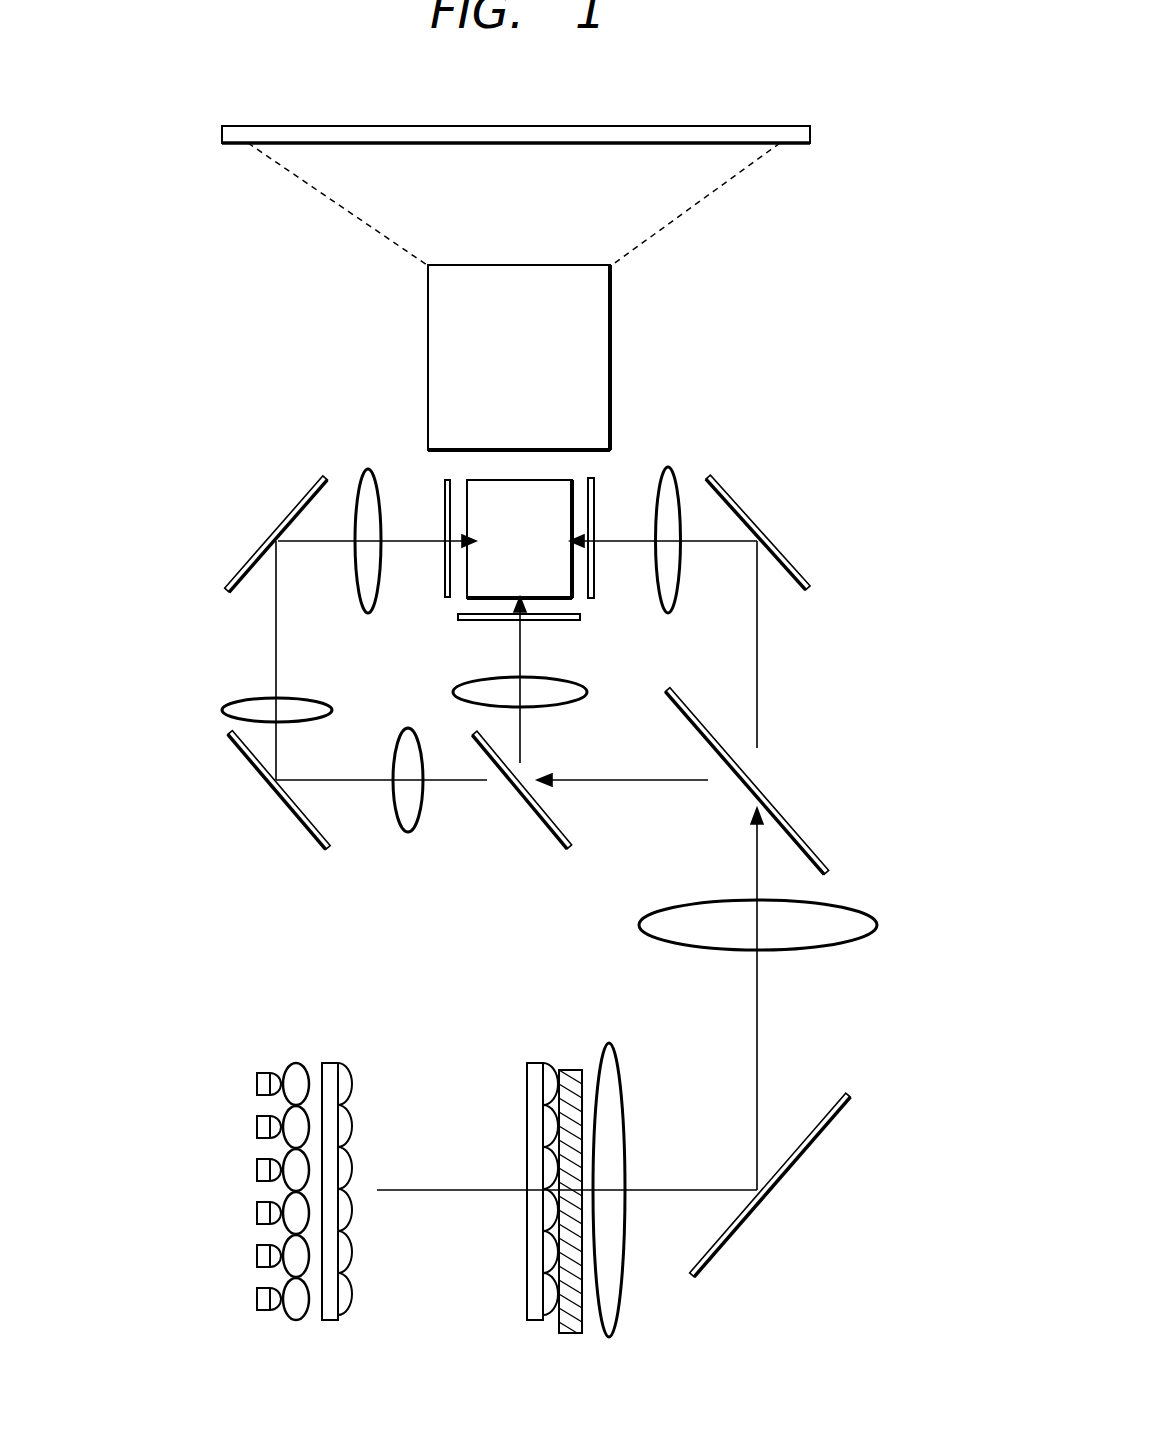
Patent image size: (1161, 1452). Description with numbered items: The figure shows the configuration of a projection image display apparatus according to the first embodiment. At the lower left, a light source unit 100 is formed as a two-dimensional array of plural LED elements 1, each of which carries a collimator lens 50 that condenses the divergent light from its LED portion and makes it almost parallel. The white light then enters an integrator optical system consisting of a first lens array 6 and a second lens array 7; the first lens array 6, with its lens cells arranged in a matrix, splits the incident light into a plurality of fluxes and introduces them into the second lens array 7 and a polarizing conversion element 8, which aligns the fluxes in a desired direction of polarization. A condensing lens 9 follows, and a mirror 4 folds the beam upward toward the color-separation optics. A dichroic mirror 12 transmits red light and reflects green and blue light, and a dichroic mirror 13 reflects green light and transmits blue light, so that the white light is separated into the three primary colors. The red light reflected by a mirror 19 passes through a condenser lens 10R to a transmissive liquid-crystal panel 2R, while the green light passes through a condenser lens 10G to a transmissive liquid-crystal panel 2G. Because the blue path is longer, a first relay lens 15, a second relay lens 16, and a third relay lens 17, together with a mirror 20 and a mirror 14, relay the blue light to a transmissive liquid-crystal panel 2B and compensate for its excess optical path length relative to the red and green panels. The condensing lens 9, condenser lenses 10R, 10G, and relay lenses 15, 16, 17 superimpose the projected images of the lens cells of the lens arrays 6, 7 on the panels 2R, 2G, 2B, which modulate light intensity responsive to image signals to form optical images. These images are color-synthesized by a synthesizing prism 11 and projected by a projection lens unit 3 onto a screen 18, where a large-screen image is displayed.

The LED element 1 is at (263, 1072).
The collimator lens 50 is at (299, 1149).
The first lens array 6 is at (330, 1063).
The second lens array 7 is at (535, 1065).
The polarizing conversion element 8 is at (570, 1075).
The condensing lens 9 is at (680, 933).
The mirror 4 is at (800, 1152).
The dichroic mirror 12 is at (785, 820).
The dichroic mirror 13 is at (527, 797).
The first relay lens 15 is at (407, 820).
The second relay lens 16 is at (230, 705).
The third relay lens 17 is at (367, 483).
The mirror 20 is at (248, 758).
The mirror 14 is at (288, 518).
The mirror 19 is at (755, 525).
The condenser lens 10R is at (670, 487).
The condenser lens 10G is at (543, 692).
The transmissive liquid-crystal panel 2B is at (445, 582).
The transmissive liquid-crystal panel 2G is at (470, 620).
The transmissive liquid-crystal panel 2R is at (597, 575).
The synthesizing prism 11 is at (487, 487).
The projection lens unit 3 is at (590, 320).
The screen 18 is at (667, 135).
The light source unit 100 is at (245, 1149).